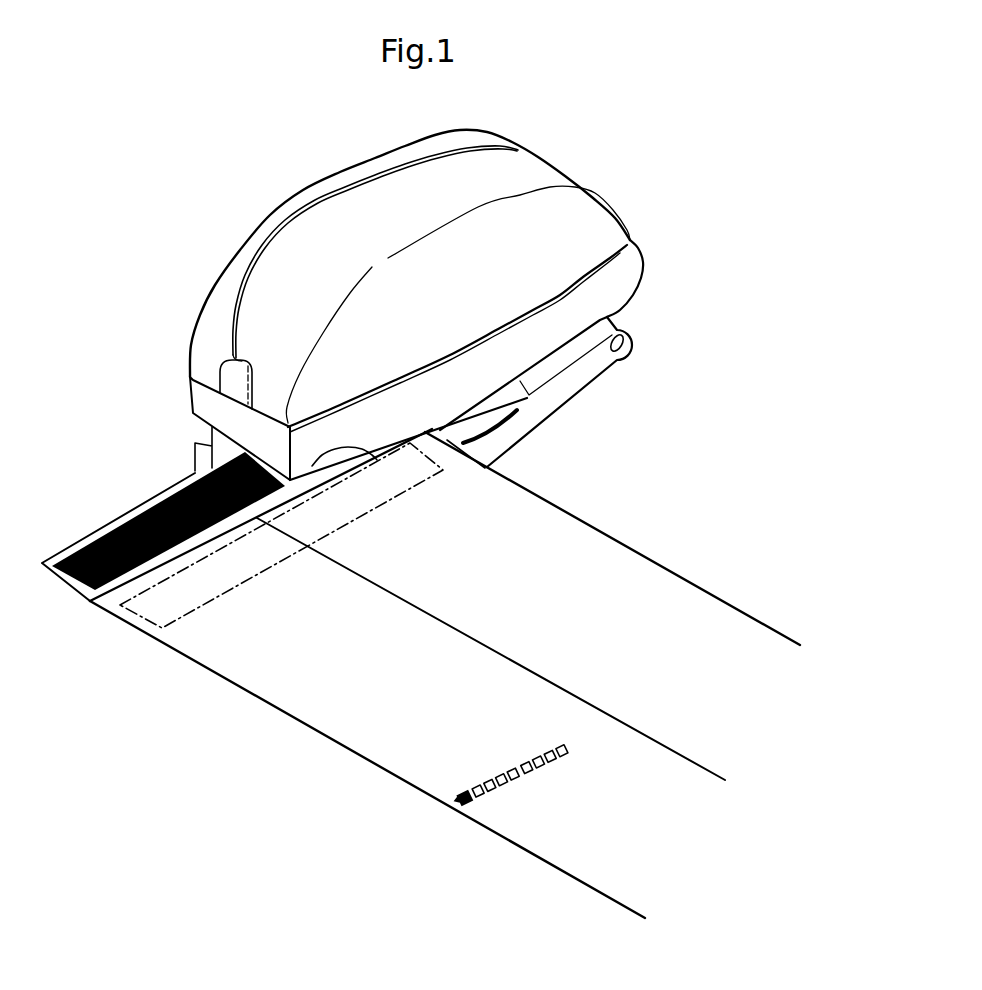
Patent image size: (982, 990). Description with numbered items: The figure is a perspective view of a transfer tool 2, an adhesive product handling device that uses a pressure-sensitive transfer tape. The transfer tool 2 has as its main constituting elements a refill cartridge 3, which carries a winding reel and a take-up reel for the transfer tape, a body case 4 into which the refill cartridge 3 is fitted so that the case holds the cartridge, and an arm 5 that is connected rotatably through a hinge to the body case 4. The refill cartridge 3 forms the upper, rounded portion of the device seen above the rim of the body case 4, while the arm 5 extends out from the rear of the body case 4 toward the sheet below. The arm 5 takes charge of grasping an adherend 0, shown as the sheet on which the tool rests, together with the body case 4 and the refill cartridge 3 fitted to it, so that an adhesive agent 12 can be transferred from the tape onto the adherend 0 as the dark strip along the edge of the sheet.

The adherend 0 is at (123, 627).
The transfer tool 2 is at (416, 294).
The refill cartridge 3 is at (408, 200).
The body case 4 is at (333, 180).
The arm 5 is at (517, 437).
The adhesive agent 12 is at (147, 510).